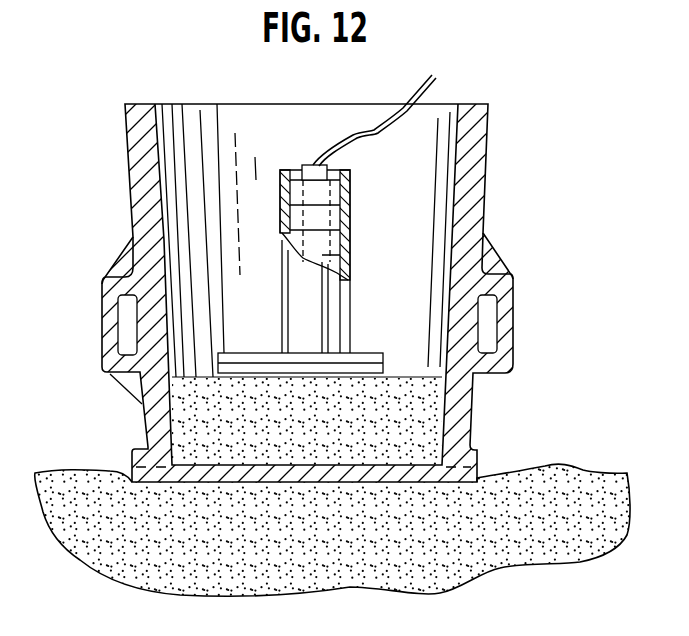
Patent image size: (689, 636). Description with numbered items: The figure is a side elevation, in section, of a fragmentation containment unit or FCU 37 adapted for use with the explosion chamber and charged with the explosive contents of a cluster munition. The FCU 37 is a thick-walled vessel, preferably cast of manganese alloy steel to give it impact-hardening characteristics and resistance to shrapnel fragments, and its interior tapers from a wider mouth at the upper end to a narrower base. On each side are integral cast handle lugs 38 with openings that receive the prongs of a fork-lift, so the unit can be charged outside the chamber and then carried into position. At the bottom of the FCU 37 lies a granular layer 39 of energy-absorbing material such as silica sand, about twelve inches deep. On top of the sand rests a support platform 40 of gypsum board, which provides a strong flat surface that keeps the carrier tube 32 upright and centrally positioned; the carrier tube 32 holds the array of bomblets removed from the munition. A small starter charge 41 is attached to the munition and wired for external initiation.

The fragmentation containment unit 37 is at (492, 162).
The handle lugs 38 is at (514, 320).
The carrier tube 32 is at (350, 218).
The starter charge 41 is at (315, 162).
The support platform 40 is at (240, 354).
The granular layer 39 is at (215, 418).